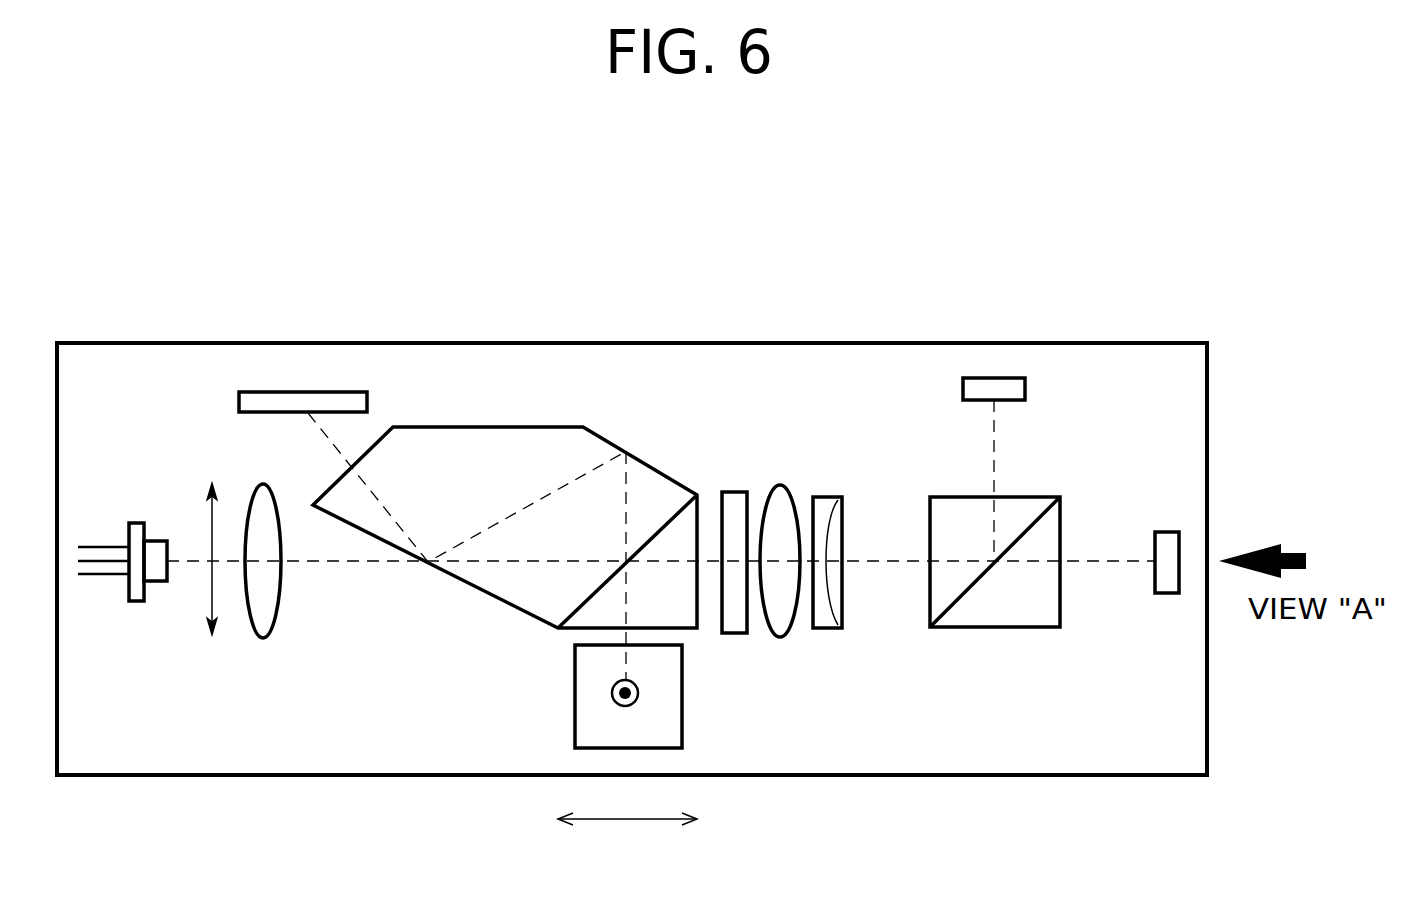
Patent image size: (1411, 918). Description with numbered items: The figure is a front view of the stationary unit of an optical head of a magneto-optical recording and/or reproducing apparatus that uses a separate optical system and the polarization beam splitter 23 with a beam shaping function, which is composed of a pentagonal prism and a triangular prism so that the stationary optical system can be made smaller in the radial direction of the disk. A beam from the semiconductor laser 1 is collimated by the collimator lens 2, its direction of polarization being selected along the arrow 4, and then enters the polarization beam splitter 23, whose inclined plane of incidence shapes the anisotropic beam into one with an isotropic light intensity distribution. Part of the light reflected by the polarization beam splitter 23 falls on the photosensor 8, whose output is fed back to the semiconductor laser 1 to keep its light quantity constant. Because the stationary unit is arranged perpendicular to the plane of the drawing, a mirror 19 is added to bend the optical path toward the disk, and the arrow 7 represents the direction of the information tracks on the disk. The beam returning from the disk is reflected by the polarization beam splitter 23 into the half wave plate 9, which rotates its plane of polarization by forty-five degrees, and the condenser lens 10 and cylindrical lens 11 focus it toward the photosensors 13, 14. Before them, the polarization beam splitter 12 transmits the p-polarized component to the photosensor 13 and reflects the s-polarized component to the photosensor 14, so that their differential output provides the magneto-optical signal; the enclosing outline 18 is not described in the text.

The semiconductor laser 1 is at (118, 530).
The collimator lens 2 is at (280, 617).
The arrow 4 is at (210, 595).
The arrow 7 is at (632, 819).
The photosensor 8 is at (249, 392).
The half wave plate 9 is at (733, 492).
The condenser lens 10 is at (777, 487).
The cylindrical lens 11 is at (830, 497).
The polarization beam splitter 12 is at (1027, 628).
The photosensor 13 is at (1168, 594).
The photosensor 14 is at (1025, 383).
The housing 18 is at (1100, 343).
The mirror 19 is at (682, 713).
The polarization beam splitter with a beam shaping function 23 is at (503, 427).